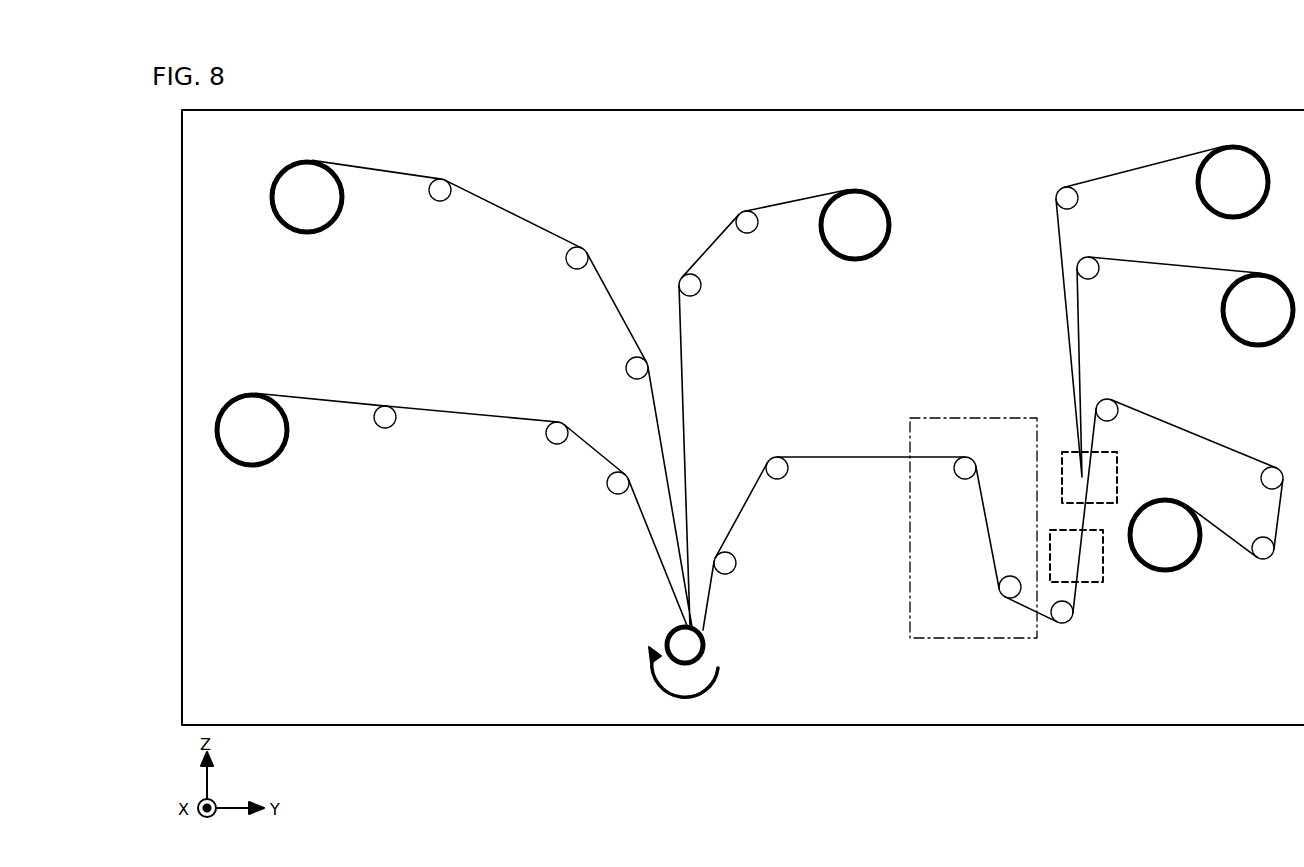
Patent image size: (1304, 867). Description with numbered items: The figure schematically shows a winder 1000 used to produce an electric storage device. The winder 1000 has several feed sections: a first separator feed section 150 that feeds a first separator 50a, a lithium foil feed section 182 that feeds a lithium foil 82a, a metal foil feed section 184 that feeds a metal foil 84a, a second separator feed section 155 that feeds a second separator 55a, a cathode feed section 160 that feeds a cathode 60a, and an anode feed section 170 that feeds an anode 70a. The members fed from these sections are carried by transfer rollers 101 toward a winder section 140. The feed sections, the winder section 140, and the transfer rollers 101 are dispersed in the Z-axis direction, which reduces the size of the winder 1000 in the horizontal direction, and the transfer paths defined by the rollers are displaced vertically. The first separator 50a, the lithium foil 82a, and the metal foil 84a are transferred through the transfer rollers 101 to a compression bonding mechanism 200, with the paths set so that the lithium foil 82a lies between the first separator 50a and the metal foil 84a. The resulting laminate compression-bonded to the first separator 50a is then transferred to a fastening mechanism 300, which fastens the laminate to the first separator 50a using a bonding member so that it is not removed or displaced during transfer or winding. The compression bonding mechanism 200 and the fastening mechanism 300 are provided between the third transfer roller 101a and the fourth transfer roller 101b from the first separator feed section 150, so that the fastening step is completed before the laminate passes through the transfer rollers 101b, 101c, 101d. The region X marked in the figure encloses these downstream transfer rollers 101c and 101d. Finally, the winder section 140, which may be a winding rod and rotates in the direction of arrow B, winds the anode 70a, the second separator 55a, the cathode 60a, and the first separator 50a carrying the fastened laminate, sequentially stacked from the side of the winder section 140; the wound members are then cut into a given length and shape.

The winder 1000 is at (1217, 98).
The second separator feed section 155 is at (316, 222).
The second separator 55a is at (370, 168).
The cathode feed section 160 is at (855, 254).
The cathode 60a is at (782, 212).
The anode feed section 170 is at (253, 452).
The anode 70a is at (323, 404).
The transfer rollers 101 is at (440, 200).
The winder section 140 is at (670, 643).
The arrow B is at (706, 680).
The metal foil feed section 184 is at (1238, 205).
The metal foil 84a is at (1103, 177).
The lithium foil feed section 182 is at (1246, 325).
The lithium foil 82a is at (1155, 270).
The third transfer roller 101a is at (1107, 398).
The fourth transfer roller 101b is at (1062, 622).
The transfer roller 101c is at (1010, 598).
The transfer roller 101d is at (965, 479).
The compression bonding mechanism 200 is at (1118, 468).
The fastening mechanism 300 is at (1098, 584).
The first separator feed section 150 is at (1165, 552).
The first separator 50a is at (1224, 532).
The region X is at (977, 414).